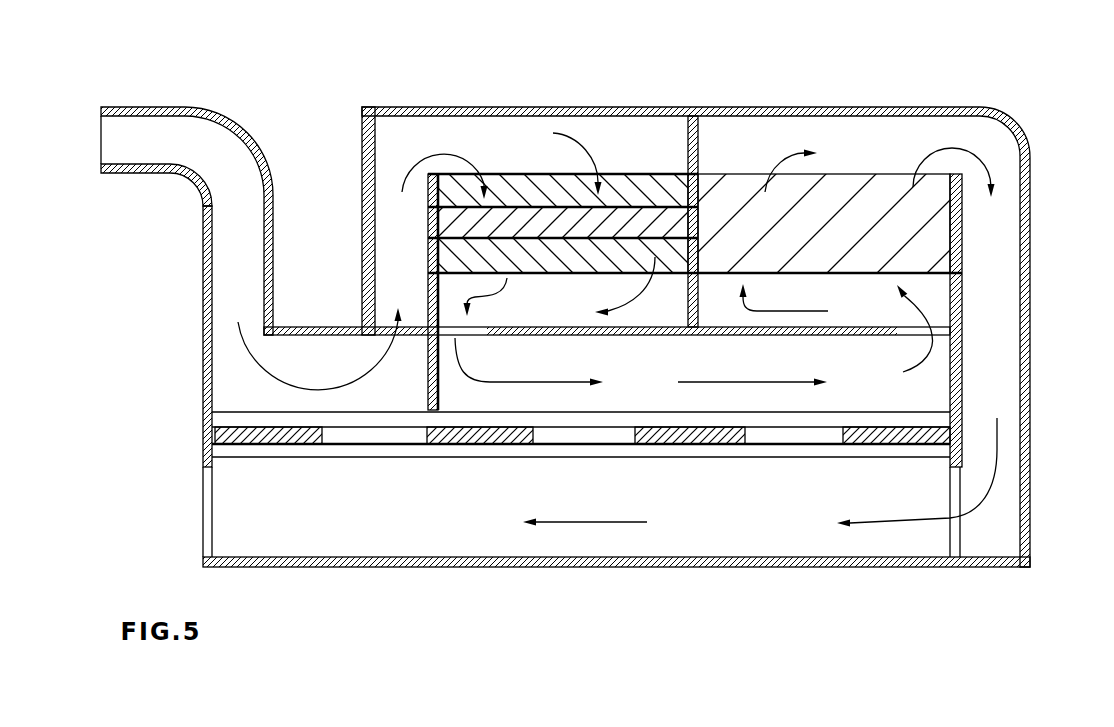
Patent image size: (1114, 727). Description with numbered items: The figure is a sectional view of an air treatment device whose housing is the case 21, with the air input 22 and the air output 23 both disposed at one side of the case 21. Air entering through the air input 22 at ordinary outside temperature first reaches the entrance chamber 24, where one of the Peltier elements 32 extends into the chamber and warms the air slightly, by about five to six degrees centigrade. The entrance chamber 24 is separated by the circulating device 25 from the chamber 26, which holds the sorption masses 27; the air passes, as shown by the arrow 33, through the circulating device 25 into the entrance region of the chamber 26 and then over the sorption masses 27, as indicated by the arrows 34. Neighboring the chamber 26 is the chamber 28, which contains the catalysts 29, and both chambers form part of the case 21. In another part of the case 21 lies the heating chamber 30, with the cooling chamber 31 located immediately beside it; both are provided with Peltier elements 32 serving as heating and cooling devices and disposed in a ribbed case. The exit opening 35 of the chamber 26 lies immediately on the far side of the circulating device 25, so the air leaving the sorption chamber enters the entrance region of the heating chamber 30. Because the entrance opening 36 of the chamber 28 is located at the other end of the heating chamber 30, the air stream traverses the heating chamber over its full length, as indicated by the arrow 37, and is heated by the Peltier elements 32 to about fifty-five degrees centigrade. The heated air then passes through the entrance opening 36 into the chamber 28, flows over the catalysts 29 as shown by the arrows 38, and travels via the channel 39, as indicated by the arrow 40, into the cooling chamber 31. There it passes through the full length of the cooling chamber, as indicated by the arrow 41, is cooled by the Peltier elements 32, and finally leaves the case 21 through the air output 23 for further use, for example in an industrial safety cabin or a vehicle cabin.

The case 21 is at (1015, 118).
The air input 22 is at (133, 137).
The air output 23 is at (208, 513).
The entrance chamber 24 is at (248, 393).
The circulating device 25 is at (437, 220).
The chamber 26 is at (534, 152).
The sorption masses 27 is at (649, 222).
The chamber 28 is at (740, 150).
The catalysts 29 is at (852, 220).
The heating chamber 30 is at (748, 358).
The cooling chamber 31 is at (842, 533).
The Peltier elements 32 is at (262, 444).
The arrow 33 is at (245, 355).
The arrows 34 is at (444, 148).
The exit opening 35 is at (453, 333).
The entrance opening 36 is at (925, 329).
The arrow 37 is at (773, 382).
The arrows 38 is at (952, 143).
The channel 39 is at (983, 265).
The arrow 40 is at (998, 463).
The arrow 41 is at (583, 522).